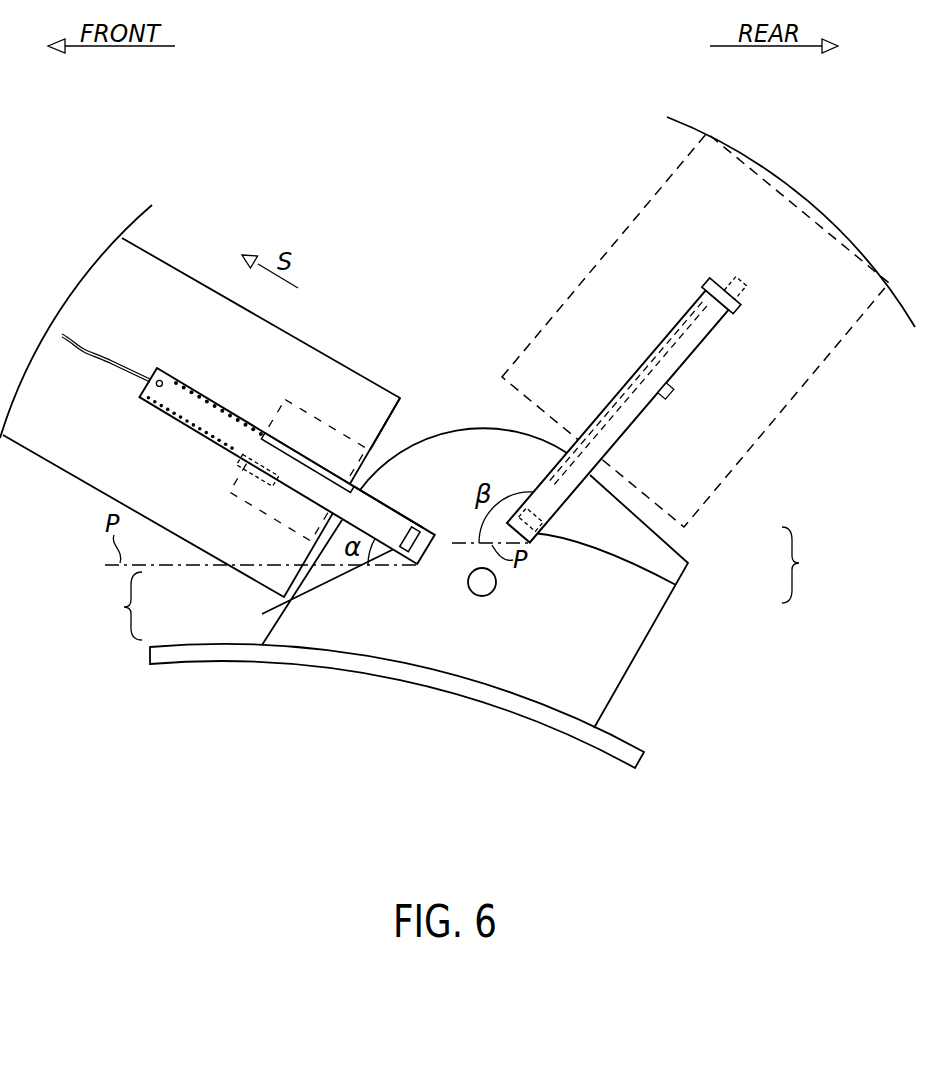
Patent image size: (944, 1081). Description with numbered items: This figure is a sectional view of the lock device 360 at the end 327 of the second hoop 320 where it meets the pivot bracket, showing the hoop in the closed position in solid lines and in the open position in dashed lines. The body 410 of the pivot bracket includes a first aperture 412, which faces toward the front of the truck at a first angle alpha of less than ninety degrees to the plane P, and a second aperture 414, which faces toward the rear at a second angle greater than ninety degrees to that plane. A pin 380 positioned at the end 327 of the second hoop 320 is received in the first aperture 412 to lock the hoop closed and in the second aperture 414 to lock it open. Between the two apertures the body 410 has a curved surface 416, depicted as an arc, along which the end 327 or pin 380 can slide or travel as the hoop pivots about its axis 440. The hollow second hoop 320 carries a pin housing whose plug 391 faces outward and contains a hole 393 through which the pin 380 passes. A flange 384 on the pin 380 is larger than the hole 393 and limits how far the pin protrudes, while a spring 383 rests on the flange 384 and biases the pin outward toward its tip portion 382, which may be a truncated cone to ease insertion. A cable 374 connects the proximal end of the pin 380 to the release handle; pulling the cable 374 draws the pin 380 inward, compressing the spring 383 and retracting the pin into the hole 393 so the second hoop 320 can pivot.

The second hoop 320 is at (186, 265).
The end 327 is at (340, 392).
The lock device 360 is at (463, 583).
The cable 374 is at (108, 358).
The pin 380 is at (321, 500).
The tip portion 382 is at (410, 531).
The spring 383 is at (192, 378).
The flange 384 is at (264, 430).
The plug 391 is at (317, 418).
The hole 393 is at (330, 460).
The body 410 is at (641, 654).
The first aperture 412 is at (262, 614).
The second aperture 414 is at (676, 585).
The curved surface 416 is at (448, 432).
The pivot axis 440 is at (474, 592).